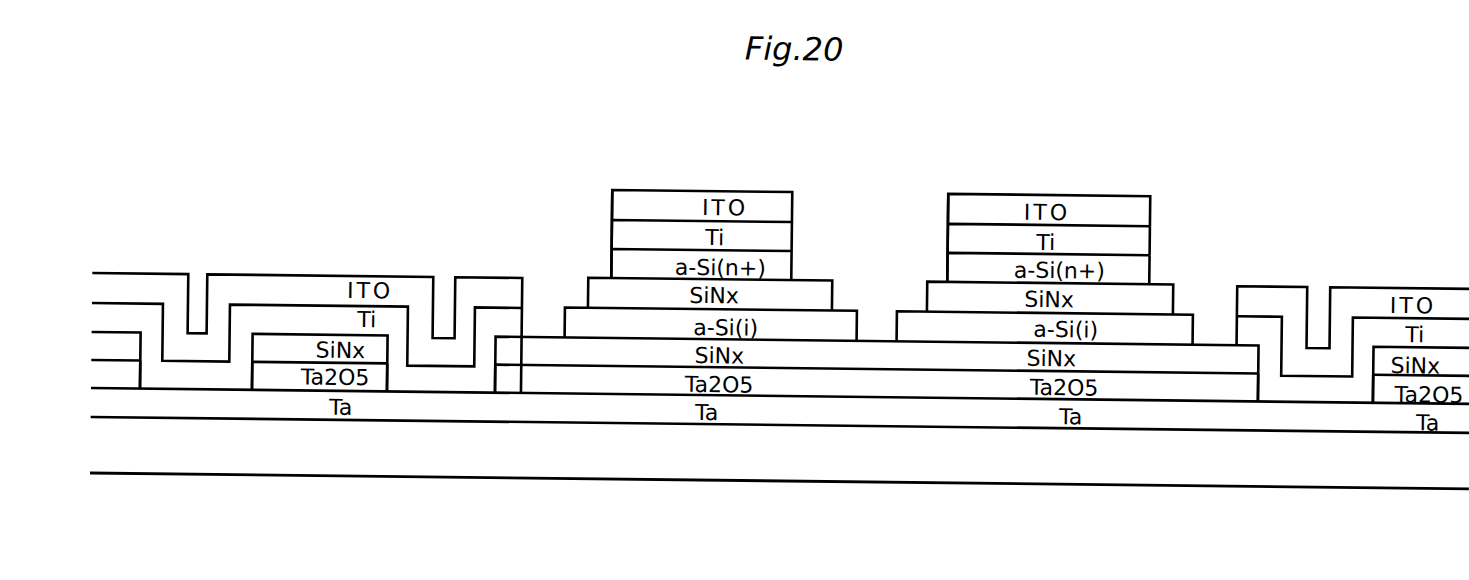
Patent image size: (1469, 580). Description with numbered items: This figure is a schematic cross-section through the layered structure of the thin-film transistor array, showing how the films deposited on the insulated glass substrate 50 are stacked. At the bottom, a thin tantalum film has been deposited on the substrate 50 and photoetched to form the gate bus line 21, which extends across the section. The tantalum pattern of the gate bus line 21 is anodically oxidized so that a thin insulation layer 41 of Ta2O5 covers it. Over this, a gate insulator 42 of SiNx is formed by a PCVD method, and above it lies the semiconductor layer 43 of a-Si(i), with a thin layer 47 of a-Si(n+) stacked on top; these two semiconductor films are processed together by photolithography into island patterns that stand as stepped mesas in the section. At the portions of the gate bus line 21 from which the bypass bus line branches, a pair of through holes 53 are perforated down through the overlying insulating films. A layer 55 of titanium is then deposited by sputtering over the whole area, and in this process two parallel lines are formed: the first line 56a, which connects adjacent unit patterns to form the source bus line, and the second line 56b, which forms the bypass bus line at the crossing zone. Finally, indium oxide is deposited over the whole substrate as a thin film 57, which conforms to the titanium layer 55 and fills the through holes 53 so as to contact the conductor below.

The gate bus line 21 is at (855, 401).
The insulation layer 41 is at (358, 380).
The gate insulator 42 is at (278, 350).
The semiconductor layer 43 is at (571, 296).
The thin layer of a-Si (n+) 47 is at (790, 261).
The insulated glass substrate 50 is at (1228, 447).
The through holes 53 is at (196, 267).
The layer of titanium 55 is at (670, 233).
The first line 56a is at (945, 234).
The second line 56b is at (608, 221).
The thin film of ITO 57 is at (609, 184).